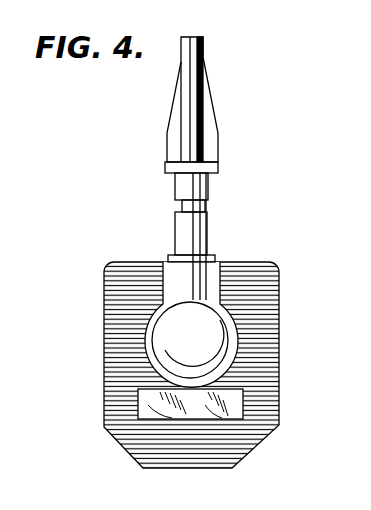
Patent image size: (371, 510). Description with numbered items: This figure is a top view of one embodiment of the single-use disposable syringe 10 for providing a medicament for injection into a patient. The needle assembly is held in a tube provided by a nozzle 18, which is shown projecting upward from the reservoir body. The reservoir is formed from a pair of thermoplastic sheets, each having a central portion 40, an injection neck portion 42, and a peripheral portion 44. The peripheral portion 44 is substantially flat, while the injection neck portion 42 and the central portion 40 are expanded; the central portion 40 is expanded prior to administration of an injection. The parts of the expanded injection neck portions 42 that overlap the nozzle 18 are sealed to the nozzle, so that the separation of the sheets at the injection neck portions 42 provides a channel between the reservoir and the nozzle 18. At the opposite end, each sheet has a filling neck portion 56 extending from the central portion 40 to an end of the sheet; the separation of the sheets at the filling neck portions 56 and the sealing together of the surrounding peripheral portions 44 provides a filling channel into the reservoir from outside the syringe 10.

The single-use disposable syringe 10 is at (114, 127).
The nozzle 18 is at (177, 233).
The central portion 40 is at (190, 337).
The injection neck portion 42 is at (216, 283).
The peripheral portion 44 is at (104, 366).
The filling neck portion 56 is at (200, 403).